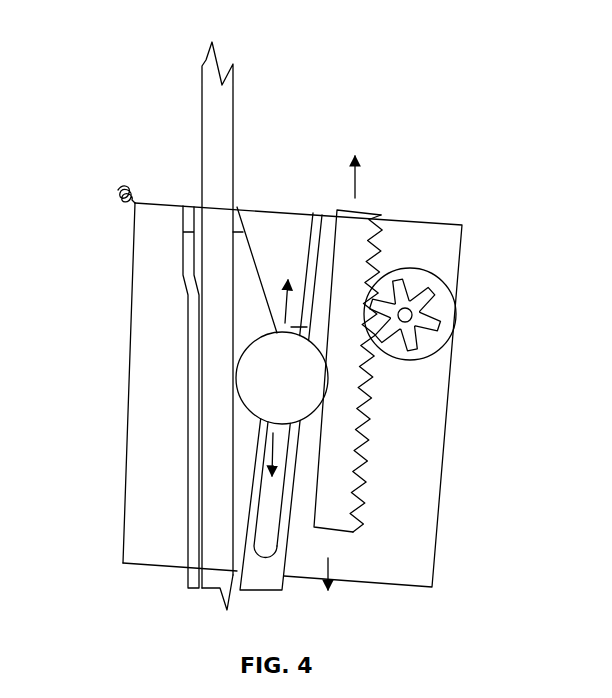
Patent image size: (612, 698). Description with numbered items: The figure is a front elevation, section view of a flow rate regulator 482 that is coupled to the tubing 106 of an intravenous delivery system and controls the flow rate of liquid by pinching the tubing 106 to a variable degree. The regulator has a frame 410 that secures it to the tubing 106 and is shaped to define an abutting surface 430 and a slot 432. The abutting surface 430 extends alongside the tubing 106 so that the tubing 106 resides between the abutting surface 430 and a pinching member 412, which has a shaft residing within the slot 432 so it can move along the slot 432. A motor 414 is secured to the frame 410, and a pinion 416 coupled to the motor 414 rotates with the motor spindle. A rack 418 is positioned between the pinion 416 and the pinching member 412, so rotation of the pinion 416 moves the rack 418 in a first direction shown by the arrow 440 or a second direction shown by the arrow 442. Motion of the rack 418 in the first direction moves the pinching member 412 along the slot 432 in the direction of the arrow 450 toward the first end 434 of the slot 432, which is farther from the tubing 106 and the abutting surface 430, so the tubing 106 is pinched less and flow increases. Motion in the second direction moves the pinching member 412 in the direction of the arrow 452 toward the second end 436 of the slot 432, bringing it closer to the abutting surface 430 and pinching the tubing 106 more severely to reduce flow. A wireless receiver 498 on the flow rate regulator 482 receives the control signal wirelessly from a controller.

The flow rate regulator 482 is at (108, 34).
The frame 410 is at (110, 355).
The wireless receiver 498 is at (118, 190).
The tubing 106 is at (223, 117).
The slot 432 is at (252, 442).
The abutting surface 430 is at (282, 530).
The second end of the slot 436 is at (253, 532).
The pinching member 412 is at (302, 392).
The arrow indicating first direction of pinching member 450 is at (287, 293).
The arrow indicating second direction of pinching member 452 is at (267, 460).
The first end of the slot 434 is at (370, 355).
The rack 418 is at (366, 390).
The motor 414 is at (453, 343).
The pinion 416 is at (438, 297).
The arrow indicating first direction of rack 440 is at (357, 183).
The arrow indicating second direction of rack 442 is at (338, 570).